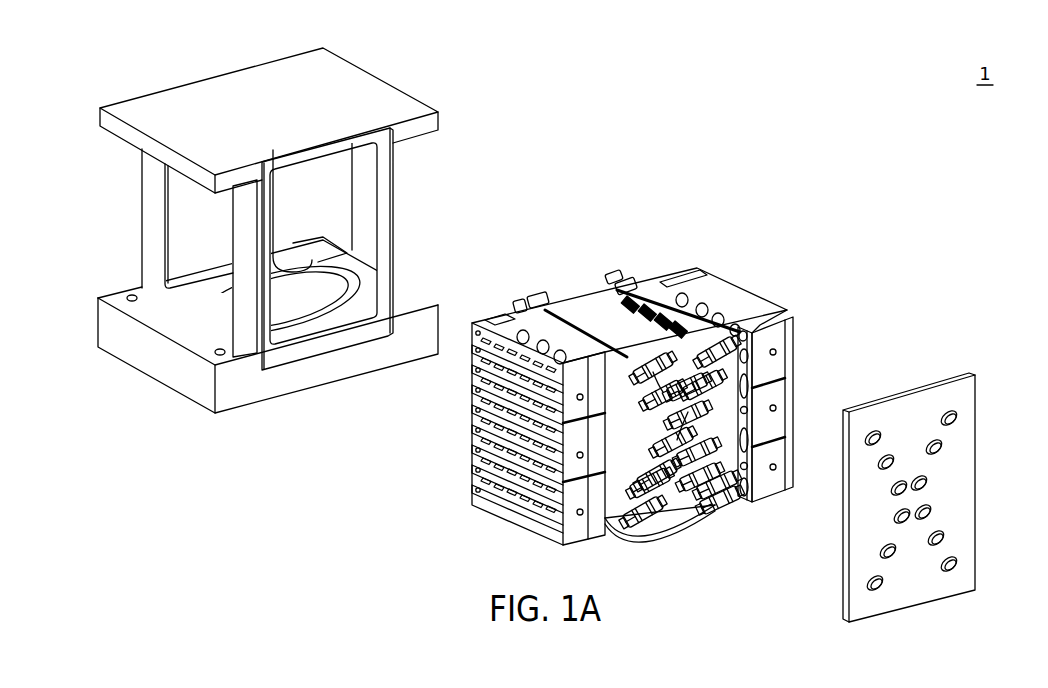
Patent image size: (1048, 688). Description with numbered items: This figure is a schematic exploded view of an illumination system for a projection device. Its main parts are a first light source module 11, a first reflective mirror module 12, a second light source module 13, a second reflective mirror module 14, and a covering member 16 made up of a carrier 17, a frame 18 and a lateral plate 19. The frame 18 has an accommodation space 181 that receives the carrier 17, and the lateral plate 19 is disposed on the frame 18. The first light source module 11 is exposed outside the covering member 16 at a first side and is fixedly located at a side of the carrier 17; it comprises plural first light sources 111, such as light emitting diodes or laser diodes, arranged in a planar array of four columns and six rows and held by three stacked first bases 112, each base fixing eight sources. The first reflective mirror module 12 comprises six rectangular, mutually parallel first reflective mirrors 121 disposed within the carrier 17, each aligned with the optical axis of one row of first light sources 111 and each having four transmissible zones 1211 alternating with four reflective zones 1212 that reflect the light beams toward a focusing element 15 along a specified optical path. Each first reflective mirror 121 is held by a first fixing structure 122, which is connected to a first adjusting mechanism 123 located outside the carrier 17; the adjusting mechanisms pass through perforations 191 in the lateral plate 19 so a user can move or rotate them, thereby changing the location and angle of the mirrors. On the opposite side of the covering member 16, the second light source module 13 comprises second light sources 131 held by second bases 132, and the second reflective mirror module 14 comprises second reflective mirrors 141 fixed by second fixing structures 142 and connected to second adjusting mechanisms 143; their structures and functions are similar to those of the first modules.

The first light source module 11 is at (789, 387).
The first light source 111 is at (737, 327).
The first base 112 is at (801, 409).
The first reflective mirror module 12 is at (705, 450).
The first reflective mirror 121 is at (662, 295).
The transmissible zone 1211 is at (650, 328).
The reflective zone 1212 is at (690, 340).
The first fixing structure 122 is at (627, 285).
The first adjusting mechanism 123 is at (618, 282).
The second light source module 13 is at (471, 434).
The second light source 131 is at (472, 403).
The second base 132 is at (375, 405).
The second reflective mirror module 14 is at (687, 515).
The second reflective mirror 141 is at (572, 318).
The second fixing structure 142 is at (550, 302).
The second adjusting mechanism 143 is at (528, 305).
The focusing element 15 is at (703, 520).
The covering member 16 is at (966, 232).
The carrier 17 is at (680, 300).
The frame 18 is at (252, 88).
The accommodation space 181 is at (340, 208).
The lateral plate 19 is at (938, 497).
The perforation 191 is at (953, 422).